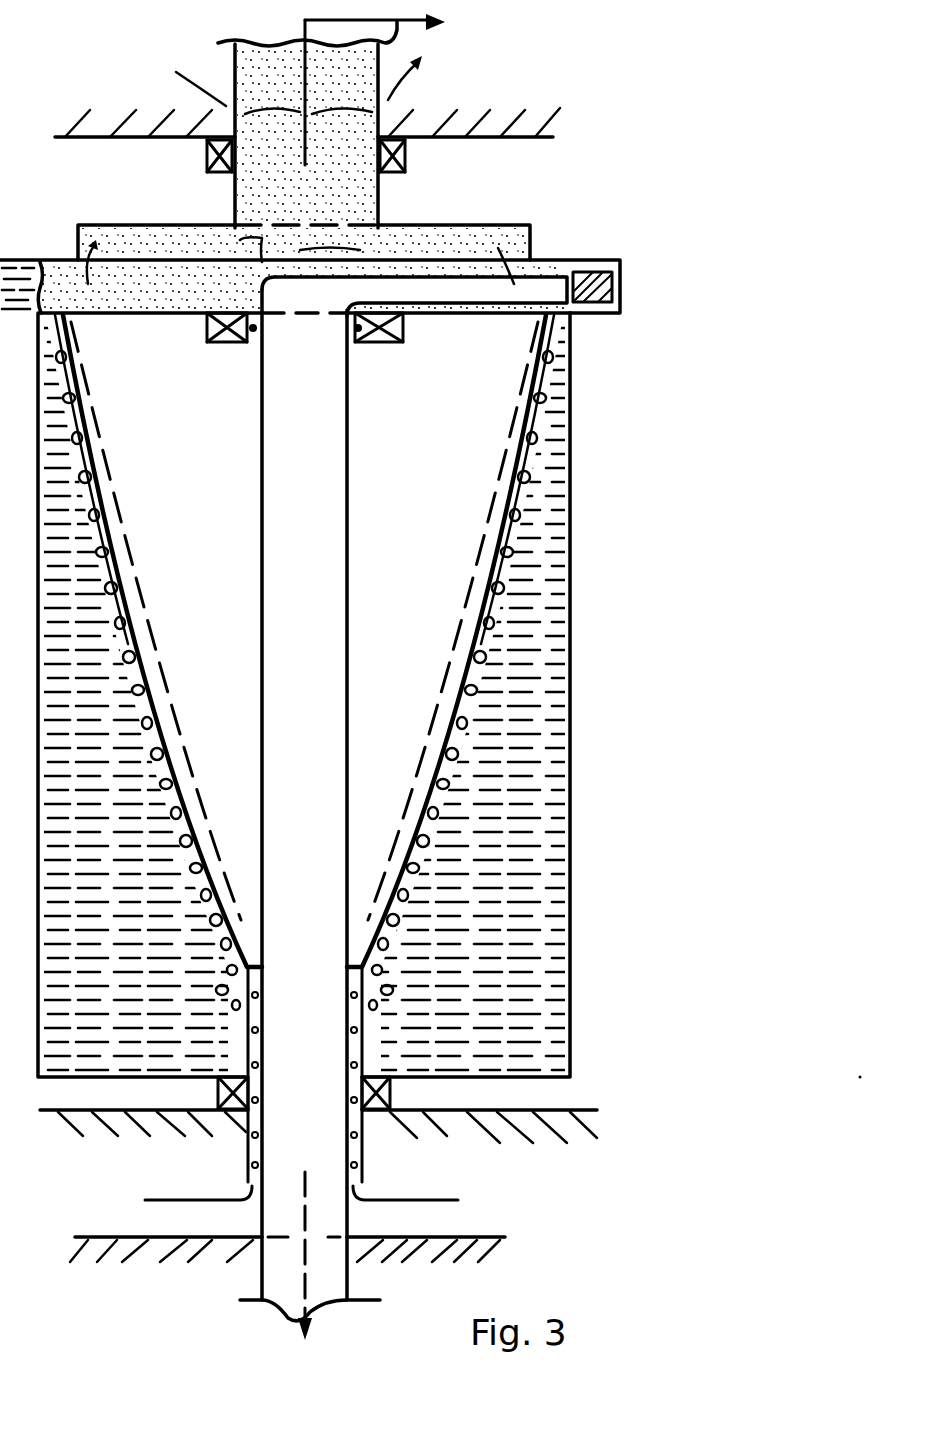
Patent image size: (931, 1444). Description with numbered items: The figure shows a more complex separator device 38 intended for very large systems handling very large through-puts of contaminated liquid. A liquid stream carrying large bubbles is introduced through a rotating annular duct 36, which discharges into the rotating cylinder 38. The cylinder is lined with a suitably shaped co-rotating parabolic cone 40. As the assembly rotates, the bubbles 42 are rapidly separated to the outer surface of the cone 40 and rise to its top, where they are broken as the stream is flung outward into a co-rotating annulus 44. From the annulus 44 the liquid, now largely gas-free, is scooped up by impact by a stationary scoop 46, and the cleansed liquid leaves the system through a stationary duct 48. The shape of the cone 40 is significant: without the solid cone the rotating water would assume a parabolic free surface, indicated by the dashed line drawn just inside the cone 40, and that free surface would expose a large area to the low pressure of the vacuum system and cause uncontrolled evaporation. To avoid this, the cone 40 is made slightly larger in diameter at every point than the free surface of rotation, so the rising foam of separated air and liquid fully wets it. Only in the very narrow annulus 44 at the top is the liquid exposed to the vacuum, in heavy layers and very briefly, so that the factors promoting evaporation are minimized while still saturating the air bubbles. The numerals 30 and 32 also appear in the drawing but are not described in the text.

The rotor tube 30 is at (250, 1268).
The outlet pipe 32 is at (395, 108).
The rotating annular duct 36 is at (366, 1171).
The rotating cylinder 38 is at (571, 614).
The parabolic cone 40 is at (548, 340).
The bubbles 42 is at (546, 456).
The co-rotating annulus 44 is at (628, 290).
The stationary scoop 46 is at (584, 268).
The stationary duct 48 is at (352, 1222).